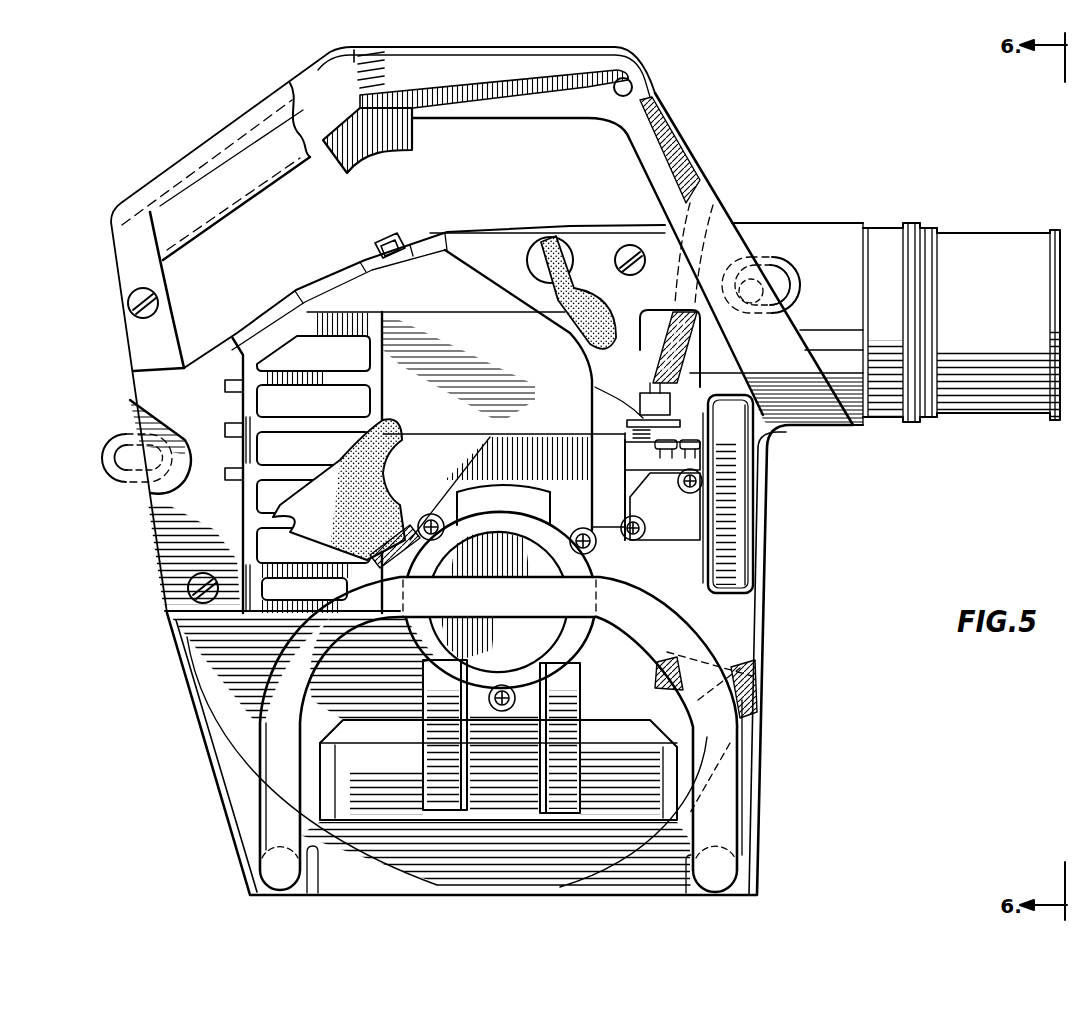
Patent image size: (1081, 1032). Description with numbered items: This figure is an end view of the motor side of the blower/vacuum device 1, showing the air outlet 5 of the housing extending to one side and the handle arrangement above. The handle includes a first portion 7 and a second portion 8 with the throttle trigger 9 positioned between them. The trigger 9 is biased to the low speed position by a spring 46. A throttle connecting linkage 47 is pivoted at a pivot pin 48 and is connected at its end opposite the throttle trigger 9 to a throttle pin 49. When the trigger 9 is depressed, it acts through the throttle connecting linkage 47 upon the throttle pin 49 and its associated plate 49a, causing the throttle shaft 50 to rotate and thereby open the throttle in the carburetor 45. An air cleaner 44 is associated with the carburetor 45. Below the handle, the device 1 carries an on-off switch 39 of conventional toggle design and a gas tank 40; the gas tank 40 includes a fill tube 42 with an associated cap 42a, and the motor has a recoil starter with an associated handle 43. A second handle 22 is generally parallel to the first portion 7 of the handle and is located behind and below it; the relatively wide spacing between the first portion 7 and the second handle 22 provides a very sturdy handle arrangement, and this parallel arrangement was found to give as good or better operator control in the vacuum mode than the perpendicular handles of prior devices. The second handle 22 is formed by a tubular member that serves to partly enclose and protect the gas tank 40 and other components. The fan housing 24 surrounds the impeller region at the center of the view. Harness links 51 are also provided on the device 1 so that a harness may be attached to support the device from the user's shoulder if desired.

The blower/vacuum device 1 is at (737, 138).
The air outlet 5 is at (978, 238).
The first portion 7 is at (524, 62).
The second portion 8 is at (243, 127).
The throttle trigger 9 is at (408, 135).
The second handle 22 is at (516, 587).
The fan housing 24 is at (610, 683).
The on-off switch 39 is at (385, 240).
The gas tank 40 is at (356, 793).
The fill tube 42 is at (447, 637).
The cap 42a is at (752, 678).
The handle 43 is at (383, 475).
The air cleaner 44 is at (752, 540).
The carburetor 45 is at (663, 522).
The spring 46 is at (386, 80).
The throttle connecting linkage 47 is at (573, 75).
The pivot pin 48 is at (632, 87).
The throttle pin 49 is at (668, 396).
The plate 49a is at (597, 388).
The throttle shaft 50 is at (627, 423).
The harness links 51 is at (100, 457).